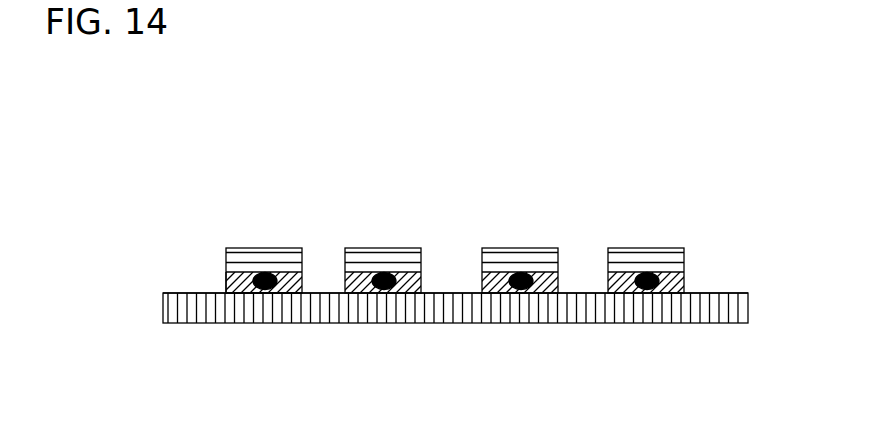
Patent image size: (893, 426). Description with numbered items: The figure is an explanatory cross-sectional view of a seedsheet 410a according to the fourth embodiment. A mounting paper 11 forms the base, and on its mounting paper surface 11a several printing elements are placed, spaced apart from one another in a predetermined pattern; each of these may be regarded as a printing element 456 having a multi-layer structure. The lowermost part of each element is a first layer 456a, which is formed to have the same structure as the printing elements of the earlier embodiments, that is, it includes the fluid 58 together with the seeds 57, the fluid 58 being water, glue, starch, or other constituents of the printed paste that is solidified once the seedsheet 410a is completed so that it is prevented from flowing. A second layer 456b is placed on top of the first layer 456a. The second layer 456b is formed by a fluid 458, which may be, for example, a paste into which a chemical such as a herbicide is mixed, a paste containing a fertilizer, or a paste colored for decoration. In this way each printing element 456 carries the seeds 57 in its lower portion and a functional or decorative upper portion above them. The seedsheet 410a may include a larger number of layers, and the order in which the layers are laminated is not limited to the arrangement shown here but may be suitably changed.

The seedsheet 410a is at (367, 183).
The mounting paper 11 is at (443, 306).
The mounting paper surface 11a is at (725, 293).
The printing element 456 is at (275, 240).
The first layer 456a is at (288, 278).
The second layer 456b is at (292, 258).
The seeds 57 is at (263, 264).
The fluid 58 is at (238, 277).
The fluid 458 is at (265, 273).